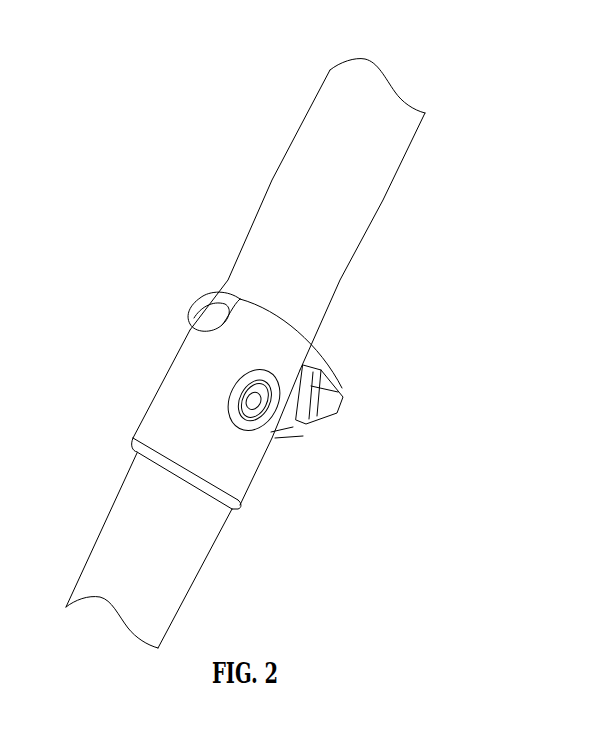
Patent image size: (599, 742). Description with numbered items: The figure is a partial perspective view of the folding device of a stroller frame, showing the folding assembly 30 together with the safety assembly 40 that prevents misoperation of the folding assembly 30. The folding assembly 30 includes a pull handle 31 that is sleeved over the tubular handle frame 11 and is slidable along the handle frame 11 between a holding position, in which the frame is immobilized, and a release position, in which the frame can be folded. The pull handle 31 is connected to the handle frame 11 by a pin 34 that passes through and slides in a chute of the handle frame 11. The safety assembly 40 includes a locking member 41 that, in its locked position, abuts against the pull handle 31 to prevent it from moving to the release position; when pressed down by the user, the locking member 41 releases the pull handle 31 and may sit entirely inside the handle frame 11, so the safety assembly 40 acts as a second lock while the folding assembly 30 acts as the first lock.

The handle frame 11 is at (292, 203).
The folding assembly 30 is at (178, 421).
The pull handle 31 is at (285, 362).
The pin 34 is at (260, 403).
The safety assembly 40 is at (126, 264).
The locking member 41 is at (190, 310).